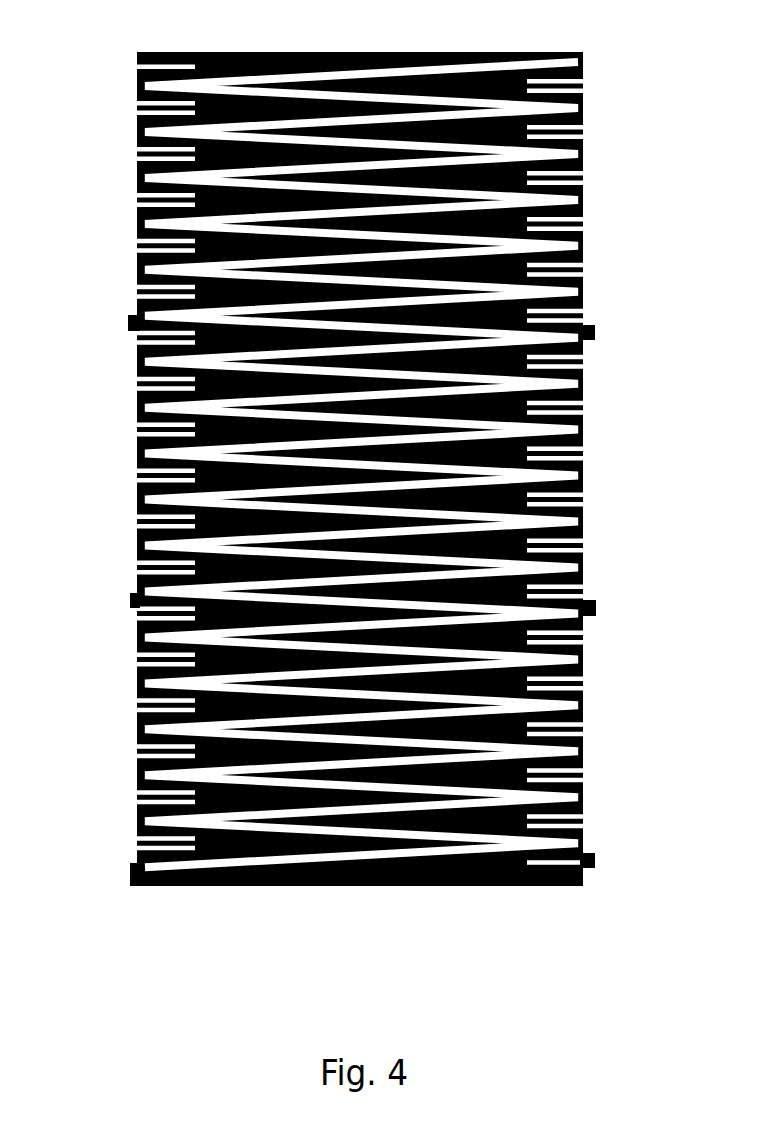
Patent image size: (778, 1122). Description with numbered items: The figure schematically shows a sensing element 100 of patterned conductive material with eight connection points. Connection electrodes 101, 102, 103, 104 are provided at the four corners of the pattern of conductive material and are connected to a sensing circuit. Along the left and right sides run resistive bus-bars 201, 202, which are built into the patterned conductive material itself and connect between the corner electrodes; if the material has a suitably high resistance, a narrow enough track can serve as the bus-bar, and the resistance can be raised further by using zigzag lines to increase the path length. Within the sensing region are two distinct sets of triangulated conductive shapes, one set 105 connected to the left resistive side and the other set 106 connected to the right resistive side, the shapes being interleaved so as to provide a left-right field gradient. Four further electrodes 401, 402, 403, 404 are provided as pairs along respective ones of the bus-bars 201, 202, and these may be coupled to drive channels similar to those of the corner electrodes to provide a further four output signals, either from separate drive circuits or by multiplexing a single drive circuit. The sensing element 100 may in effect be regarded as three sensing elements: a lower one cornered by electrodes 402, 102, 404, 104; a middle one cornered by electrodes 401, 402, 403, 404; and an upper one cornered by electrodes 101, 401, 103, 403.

The sensing element 100 is at (355, 930).
The connection electrode 101 is at (128, 46).
The connection electrode 102 is at (122, 852).
The connection electrode 103 is at (578, 60).
The connection electrode 104 is at (587, 862).
The set of triangulated conductive shapes 105 is at (223, 880).
The set of triangulated conductive shapes 106 is at (528, 878).
The resistive bus-bar 201 is at (128, 484).
The resistive bus-bar 202 is at (577, 183).
The further electrode 401 is at (120, 311).
The further electrode 402 is at (122, 583).
The further electrode 403 is at (587, 313).
The further electrode 404 is at (578, 592).